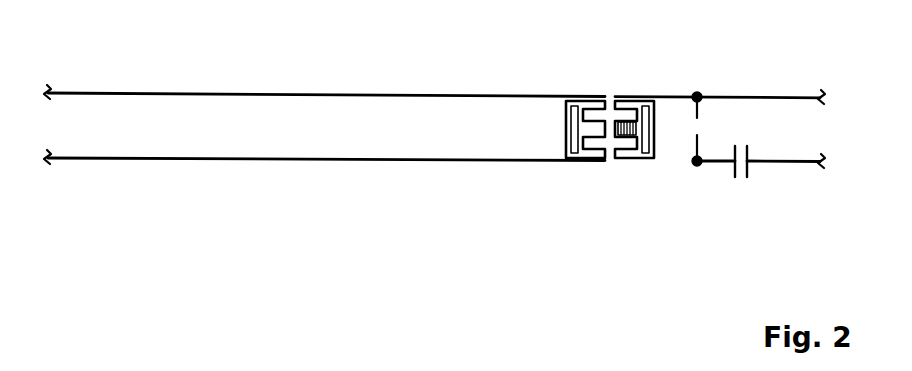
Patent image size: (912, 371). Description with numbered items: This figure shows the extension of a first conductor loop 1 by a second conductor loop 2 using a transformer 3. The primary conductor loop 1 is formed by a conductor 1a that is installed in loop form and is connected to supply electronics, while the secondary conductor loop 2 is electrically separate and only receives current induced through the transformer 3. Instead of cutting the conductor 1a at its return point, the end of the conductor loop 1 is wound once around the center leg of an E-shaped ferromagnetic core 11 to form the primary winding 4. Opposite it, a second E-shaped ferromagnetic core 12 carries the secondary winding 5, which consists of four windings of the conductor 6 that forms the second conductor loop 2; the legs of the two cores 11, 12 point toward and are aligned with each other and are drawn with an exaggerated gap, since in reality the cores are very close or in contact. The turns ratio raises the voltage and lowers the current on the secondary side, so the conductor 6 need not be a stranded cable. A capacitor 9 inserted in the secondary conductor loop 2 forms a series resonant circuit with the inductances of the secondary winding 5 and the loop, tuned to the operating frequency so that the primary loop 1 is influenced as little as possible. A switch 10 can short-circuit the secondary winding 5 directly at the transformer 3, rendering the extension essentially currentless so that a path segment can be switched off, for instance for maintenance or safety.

The primary conductor loop 1 is at (434, 148).
The conductor 1a is at (245, 94).
The secondary conductor loop 2 is at (750, 157).
The transformer 3 is at (583, 139).
The primary winding 4 is at (537, 139).
The secondary winding 5 is at (620, 124).
The conductor 6 is at (712, 96).
The capacitor 9 is at (735, 175).
The switch 10 is at (706, 126).
The E-shaped ferromagnetic core 11 is at (578, 140).
The E-shaped ferromagnetic core 12 is at (649, 95).